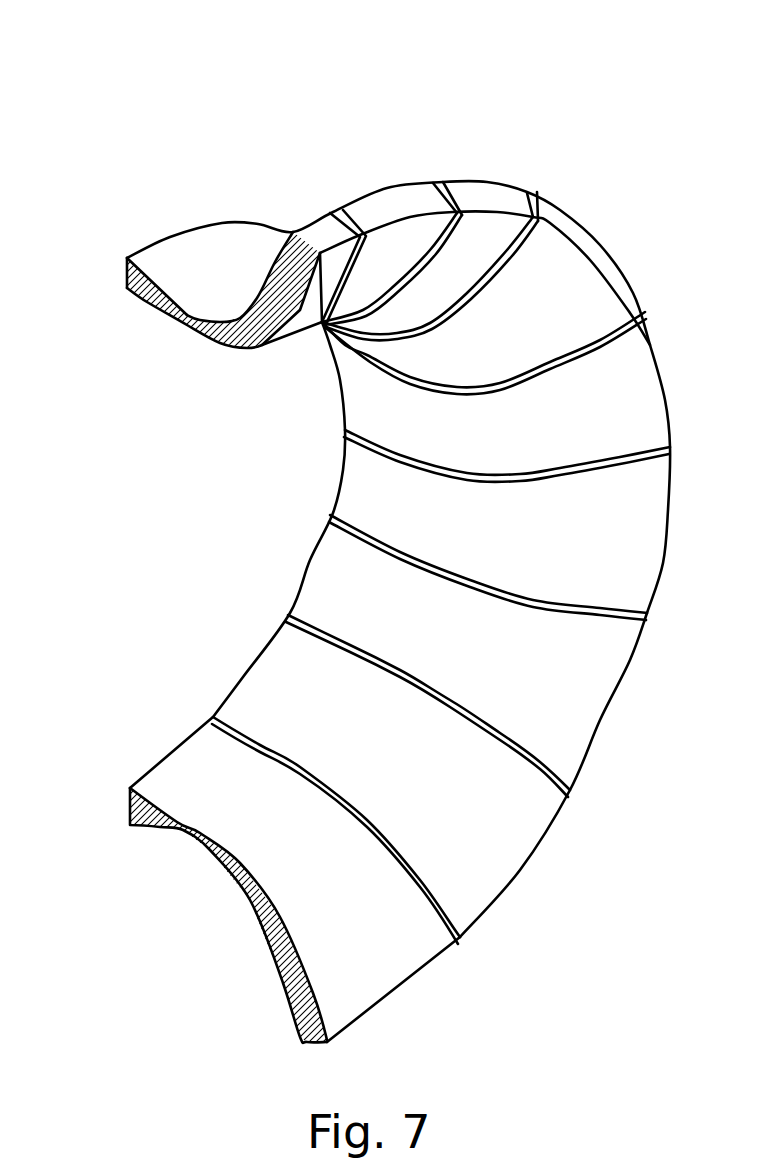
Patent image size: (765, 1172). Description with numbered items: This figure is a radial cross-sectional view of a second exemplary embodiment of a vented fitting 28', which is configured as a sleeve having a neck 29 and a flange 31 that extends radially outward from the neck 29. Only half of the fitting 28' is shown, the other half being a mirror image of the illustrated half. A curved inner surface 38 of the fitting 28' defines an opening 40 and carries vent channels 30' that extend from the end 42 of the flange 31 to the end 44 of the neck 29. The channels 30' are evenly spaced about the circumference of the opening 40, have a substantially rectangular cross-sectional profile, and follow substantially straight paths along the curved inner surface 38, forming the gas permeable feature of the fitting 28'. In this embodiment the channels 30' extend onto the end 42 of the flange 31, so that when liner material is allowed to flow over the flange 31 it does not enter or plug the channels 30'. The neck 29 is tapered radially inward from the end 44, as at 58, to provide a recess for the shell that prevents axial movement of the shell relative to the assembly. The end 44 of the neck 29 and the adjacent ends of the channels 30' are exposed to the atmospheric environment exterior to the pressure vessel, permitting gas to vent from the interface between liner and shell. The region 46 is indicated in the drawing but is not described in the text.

The fitting 28' is at (383, 475).
The neck 29 is at (215, 800).
The vent channels 30' is at (414, 538).
The flange 31 is at (362, 987).
The curved inner surface 38 is at (327, 265).
The opening 40 is at (337, 482).
The end of flange 42 is at (398, 203).
The end of neck 44 is at (127, 277).
The channel 46 is at (208, 226).
The tapered portion of neck 58 is at (190, 317).